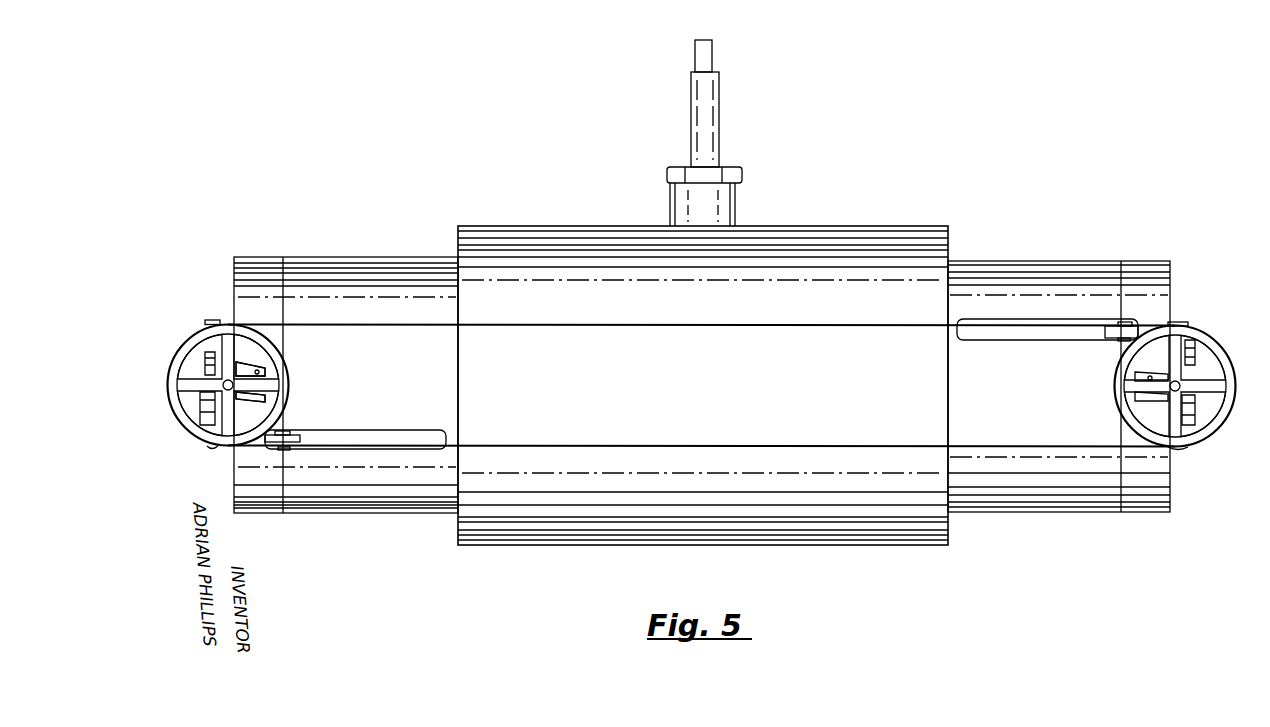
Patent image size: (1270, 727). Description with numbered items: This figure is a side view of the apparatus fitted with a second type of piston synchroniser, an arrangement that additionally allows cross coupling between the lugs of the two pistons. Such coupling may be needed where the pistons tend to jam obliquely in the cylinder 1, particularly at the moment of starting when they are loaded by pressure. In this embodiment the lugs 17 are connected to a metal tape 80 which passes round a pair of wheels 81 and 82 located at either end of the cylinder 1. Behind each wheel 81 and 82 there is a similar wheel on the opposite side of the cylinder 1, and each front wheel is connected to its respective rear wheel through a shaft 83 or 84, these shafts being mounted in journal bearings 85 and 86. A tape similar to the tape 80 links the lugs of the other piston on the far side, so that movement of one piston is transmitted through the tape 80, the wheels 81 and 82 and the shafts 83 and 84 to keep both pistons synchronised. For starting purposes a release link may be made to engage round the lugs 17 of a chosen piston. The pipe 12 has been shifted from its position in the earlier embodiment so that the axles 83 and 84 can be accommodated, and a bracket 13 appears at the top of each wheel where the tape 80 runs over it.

The cylinder 1 is at (408, 258).
The pipe 12 is at (208, 416).
The bracket 13 is at (213, 322).
The lug 17 is at (276, 445).
The metal tape 80 is at (733, 325).
The wheel 81 is at (1208, 440).
The wheel 82 is at (212, 448).
The shaft 83 is at (1172, 393).
The shaft 84 is at (232, 380).
The journal bearing 85 is at (1150, 374).
The journal bearing 86 is at (248, 396).